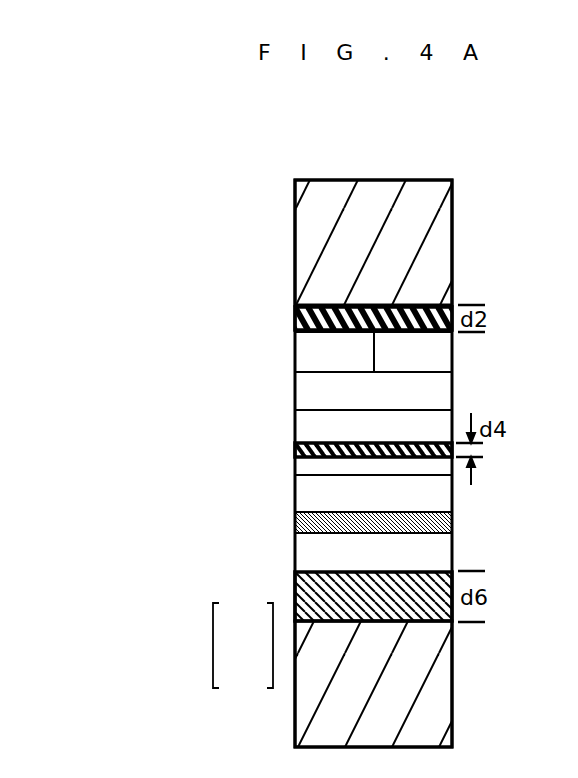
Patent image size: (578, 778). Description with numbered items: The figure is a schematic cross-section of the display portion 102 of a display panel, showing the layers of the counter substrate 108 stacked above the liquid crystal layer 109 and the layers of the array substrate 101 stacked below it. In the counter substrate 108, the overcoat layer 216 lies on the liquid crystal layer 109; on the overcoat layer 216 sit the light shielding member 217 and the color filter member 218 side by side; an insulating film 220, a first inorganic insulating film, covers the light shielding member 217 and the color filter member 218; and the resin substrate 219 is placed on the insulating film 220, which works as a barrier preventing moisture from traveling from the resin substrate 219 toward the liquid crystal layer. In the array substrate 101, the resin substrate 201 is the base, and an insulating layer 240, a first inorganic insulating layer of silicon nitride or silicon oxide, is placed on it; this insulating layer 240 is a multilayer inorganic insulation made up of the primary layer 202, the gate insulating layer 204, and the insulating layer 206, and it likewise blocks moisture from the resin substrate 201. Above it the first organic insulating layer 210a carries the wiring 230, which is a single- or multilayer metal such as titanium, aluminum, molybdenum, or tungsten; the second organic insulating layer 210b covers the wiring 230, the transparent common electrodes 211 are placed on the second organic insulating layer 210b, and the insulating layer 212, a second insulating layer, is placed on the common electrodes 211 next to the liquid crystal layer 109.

The display portion 102 is at (398, 147).
The counter substrate 108 is at (222, 210).
The resin substrate 219 is at (295, 245).
The insulating film 220 is at (295, 312).
The light shielding member 217 is at (295, 340).
The overcoat layer 216 is at (295, 375).
The color filter member 218 is at (453, 350).
The liquid crystal layer 109 is at (295, 420).
The array substrate 101 is at (210, 418).
The insulating layer 212 is at (295, 450).
The common electrodes 211 is at (295, 470).
The second organic insulating layer 210b is at (295, 500).
The wiring 230 is at (295, 525).
The first organic insulating layer 210a is at (295, 565).
The insulating layer 240 is at (295, 597).
The insulating layer 206 is at (241, 617).
The gate insulating layer 204 is at (241, 644).
The primary layer 202 is at (241, 670).
The resin substrate 201 is at (295, 722).